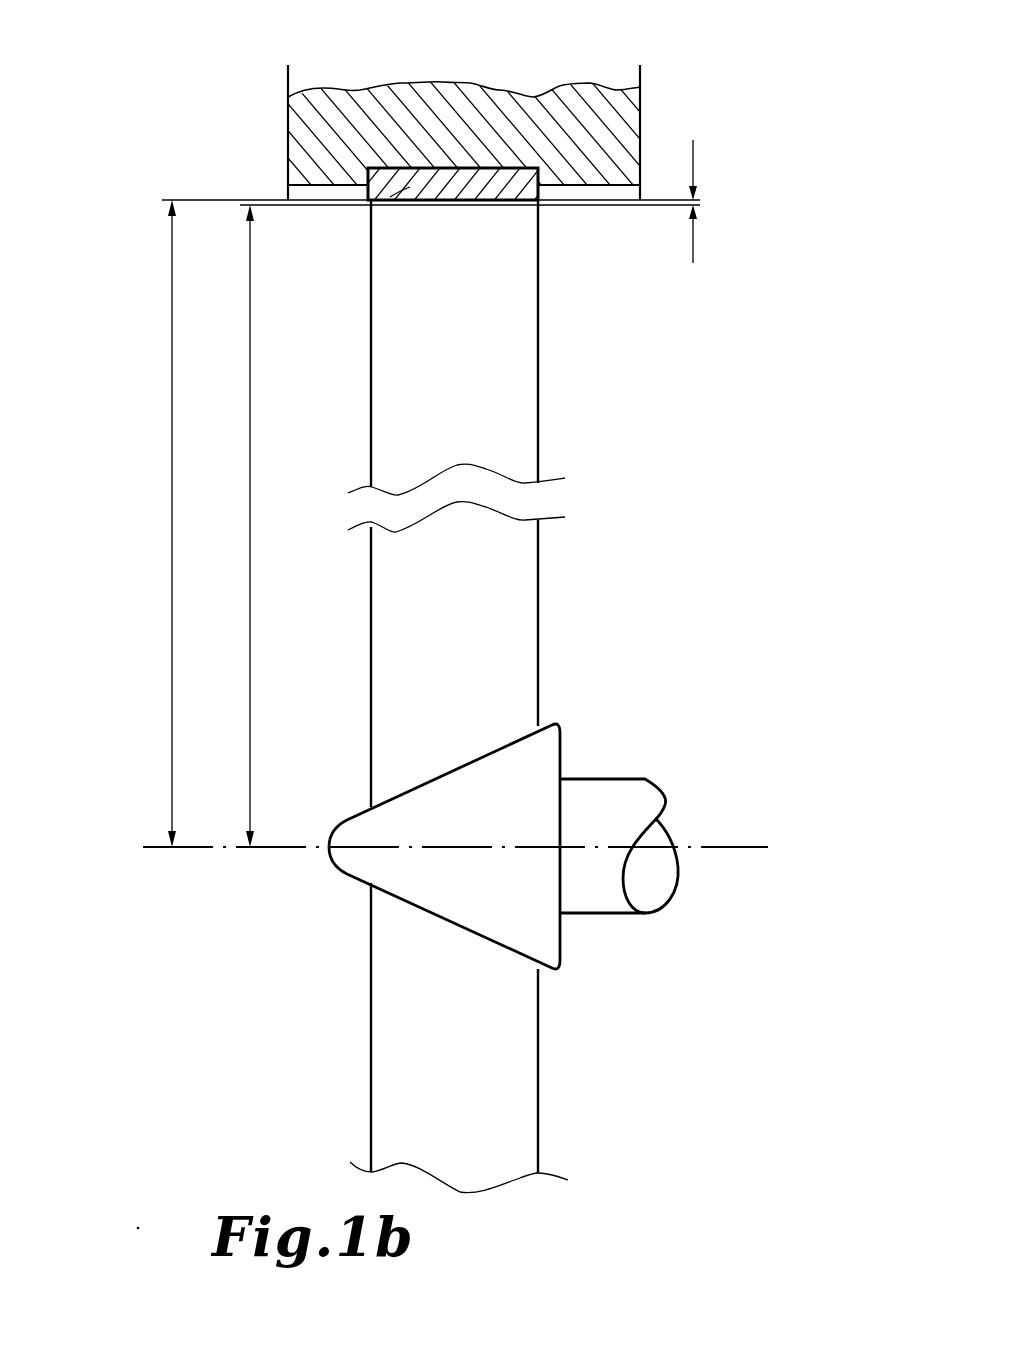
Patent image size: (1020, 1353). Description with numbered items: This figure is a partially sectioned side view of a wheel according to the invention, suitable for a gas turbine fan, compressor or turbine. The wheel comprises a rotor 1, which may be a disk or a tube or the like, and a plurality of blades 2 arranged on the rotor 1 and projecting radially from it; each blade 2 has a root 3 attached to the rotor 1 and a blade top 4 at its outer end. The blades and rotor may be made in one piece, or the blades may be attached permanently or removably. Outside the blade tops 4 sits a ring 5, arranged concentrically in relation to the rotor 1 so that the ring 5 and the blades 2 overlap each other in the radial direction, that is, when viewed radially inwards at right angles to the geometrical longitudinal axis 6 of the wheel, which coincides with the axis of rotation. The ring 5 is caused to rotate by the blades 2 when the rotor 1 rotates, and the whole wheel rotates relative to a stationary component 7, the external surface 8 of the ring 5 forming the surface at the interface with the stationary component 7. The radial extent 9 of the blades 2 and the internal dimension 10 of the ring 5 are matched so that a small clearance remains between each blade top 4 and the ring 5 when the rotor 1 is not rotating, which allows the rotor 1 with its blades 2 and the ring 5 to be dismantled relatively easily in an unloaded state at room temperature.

The rotor 1 is at (530, 893).
The blade 2 is at (498, 372).
The root 3 is at (481, 730).
The blade top 4 is at (485, 203).
The ring 5 is at (395, 194).
The geometrical longitudinal axis 6 is at (720, 847).
The stationary component 7 is at (533, 113).
The external surface 8 is at (417, 160).
The extent of the blades 9 is at (248, 540).
The internal dimension of the ring 10 is at (170, 482).